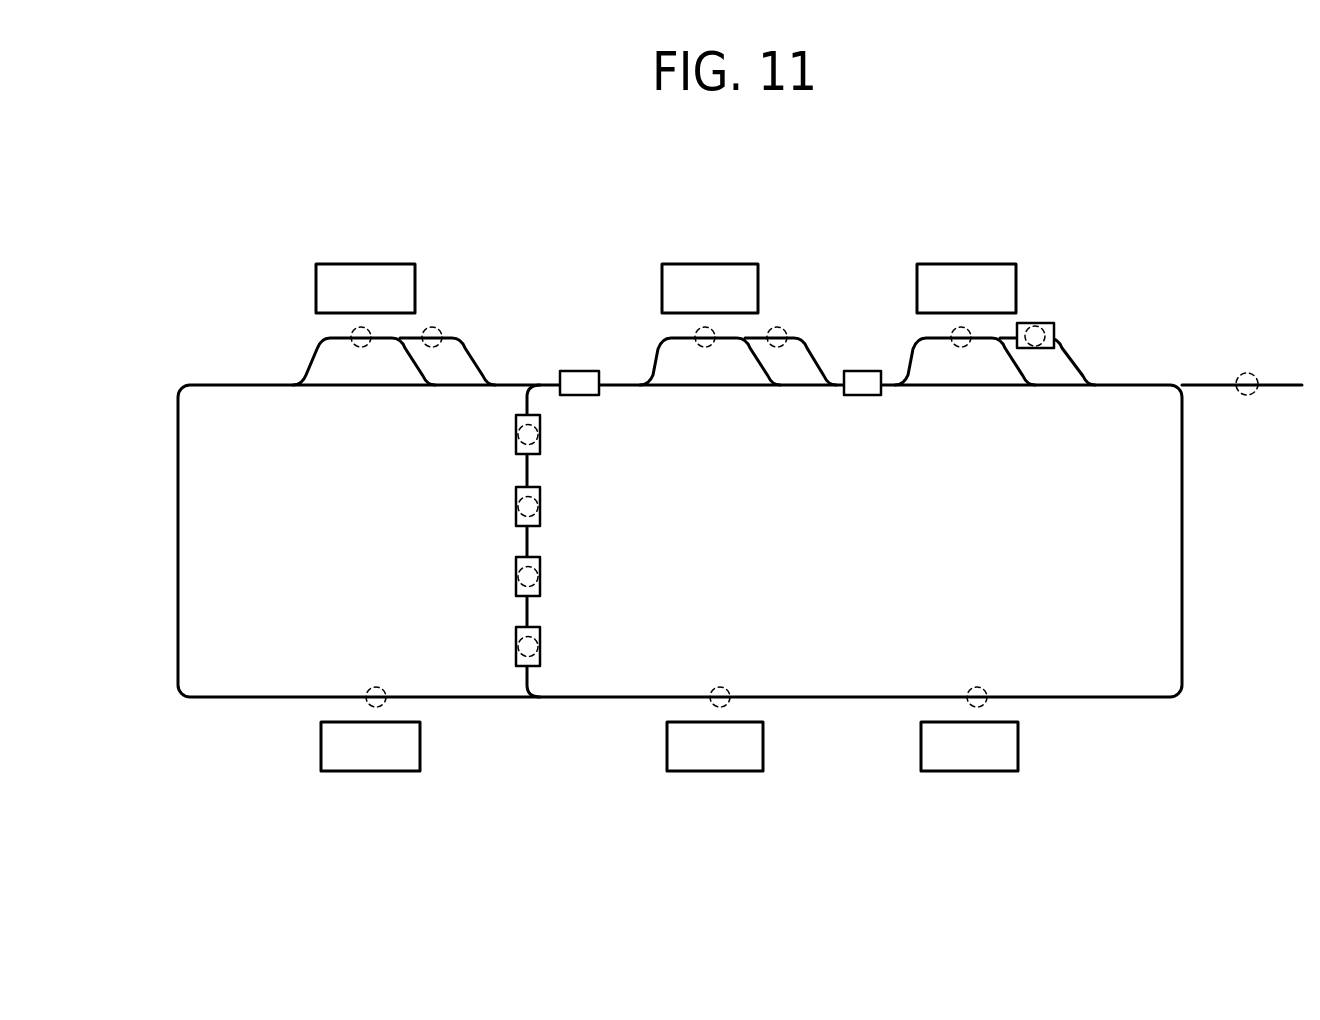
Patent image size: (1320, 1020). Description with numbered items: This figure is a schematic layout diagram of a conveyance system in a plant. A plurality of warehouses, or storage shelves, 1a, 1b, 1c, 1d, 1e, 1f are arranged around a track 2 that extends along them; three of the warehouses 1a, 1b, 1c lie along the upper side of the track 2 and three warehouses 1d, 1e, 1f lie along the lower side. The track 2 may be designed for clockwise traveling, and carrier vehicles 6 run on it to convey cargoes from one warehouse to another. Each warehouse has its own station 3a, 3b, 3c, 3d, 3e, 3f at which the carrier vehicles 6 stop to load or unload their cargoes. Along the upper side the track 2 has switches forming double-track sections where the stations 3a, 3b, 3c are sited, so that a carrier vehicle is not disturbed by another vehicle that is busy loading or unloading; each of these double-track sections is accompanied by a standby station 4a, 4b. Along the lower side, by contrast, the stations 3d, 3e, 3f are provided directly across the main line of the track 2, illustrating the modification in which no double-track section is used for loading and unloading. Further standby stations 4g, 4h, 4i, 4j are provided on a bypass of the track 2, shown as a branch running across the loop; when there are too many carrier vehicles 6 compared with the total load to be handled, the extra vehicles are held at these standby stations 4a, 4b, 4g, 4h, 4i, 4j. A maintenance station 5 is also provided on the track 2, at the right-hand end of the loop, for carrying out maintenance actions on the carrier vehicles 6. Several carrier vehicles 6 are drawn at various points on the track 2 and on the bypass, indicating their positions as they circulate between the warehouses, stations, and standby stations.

The warehouse 1a is at (361, 281).
The warehouse 1b is at (706, 281).
The warehouse 1c is at (961, 281).
The warehouse 1d is at (975, 753).
The warehouse 1e is at (720, 753).
The warehouse 1f is at (375, 753).
The track 2 is at (253, 383).
The station 3a is at (353, 328).
The station 3b is at (700, 327).
The station 3c is at (956, 327).
The station 3d is at (976, 687).
The station 3e is at (722, 687).
The station 3f is at (376, 687).
The standby station 4a is at (436, 327).
The standby station 4b is at (781, 326).
The standby station 4g is at (542, 662).
The standby station 4h is at (542, 592).
The standby station 4i is at (542, 522).
The standby station 4j is at (542, 450).
The maintenance station 5 is at (1249, 372).
The carrier vehicle 6 is at (582, 382).